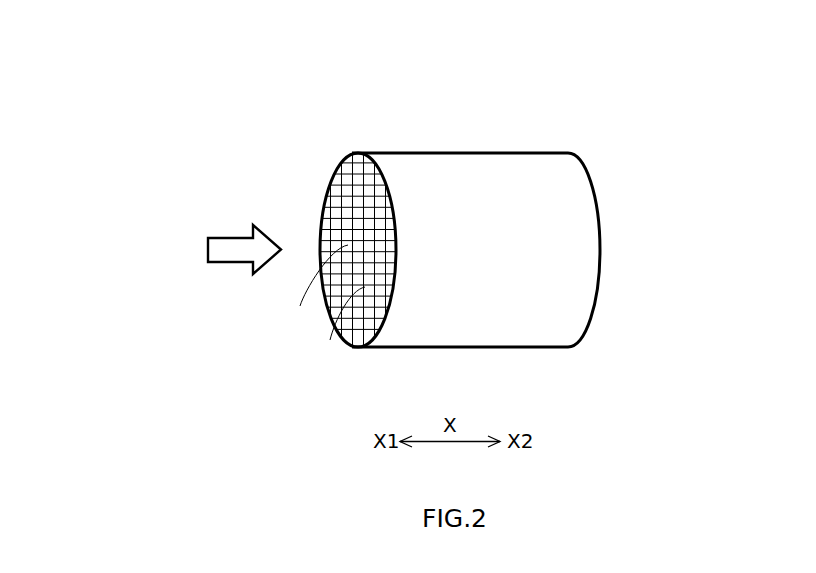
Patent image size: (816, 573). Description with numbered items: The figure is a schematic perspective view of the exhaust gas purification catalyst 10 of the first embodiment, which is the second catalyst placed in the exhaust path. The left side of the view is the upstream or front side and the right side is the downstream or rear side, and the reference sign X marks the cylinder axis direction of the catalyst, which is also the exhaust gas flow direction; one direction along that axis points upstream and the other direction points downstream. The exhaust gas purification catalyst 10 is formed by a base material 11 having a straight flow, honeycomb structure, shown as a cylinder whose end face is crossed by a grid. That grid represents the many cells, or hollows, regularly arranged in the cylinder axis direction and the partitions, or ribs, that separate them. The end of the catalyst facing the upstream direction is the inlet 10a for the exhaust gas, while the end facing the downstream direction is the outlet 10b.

The exhaust gas purification catalyst 10 is at (465, 198).
The inlet 10a is at (357, 217).
The outlet 10b is at (573, 152).
The base material 11 is at (490, 160).